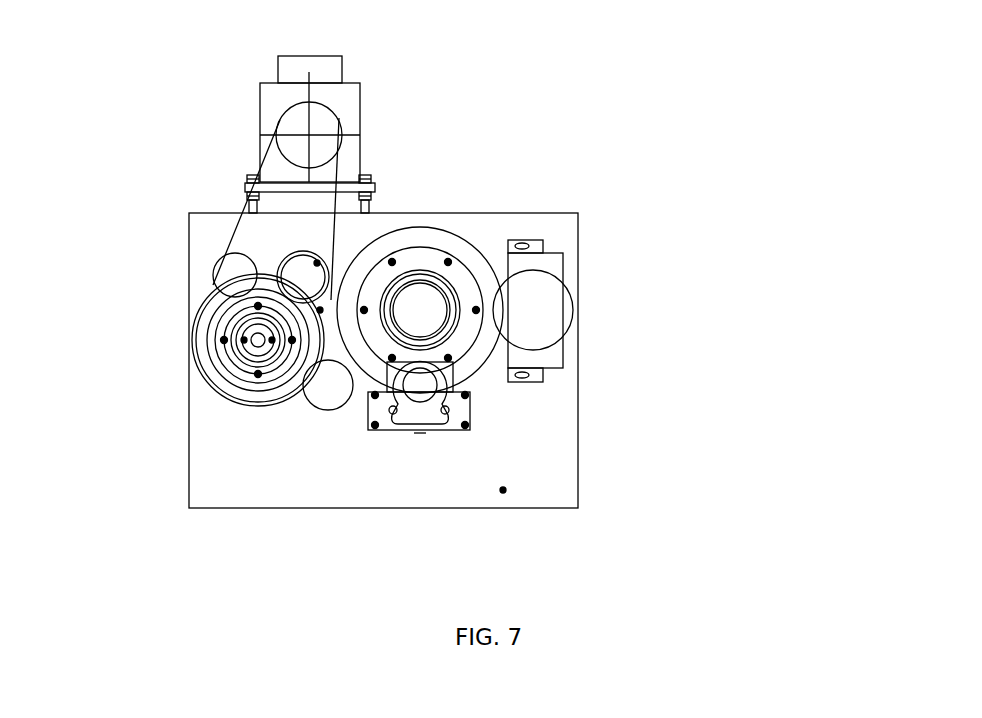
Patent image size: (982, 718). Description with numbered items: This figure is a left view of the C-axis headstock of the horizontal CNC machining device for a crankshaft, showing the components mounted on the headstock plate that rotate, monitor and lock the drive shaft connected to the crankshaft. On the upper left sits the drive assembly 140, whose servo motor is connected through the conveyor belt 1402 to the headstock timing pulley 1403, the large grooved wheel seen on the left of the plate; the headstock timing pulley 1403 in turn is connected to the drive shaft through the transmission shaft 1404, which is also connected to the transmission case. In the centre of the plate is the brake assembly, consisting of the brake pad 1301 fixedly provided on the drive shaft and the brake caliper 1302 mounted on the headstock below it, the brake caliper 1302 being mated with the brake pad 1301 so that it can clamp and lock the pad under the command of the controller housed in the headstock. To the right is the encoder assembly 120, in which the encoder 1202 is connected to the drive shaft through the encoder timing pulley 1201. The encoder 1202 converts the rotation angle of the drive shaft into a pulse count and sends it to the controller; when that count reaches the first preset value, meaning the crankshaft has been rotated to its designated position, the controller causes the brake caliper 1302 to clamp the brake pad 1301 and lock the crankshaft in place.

The drive assembly 140 is at (232, 119).
The conveyor belt 1402 is at (194, 213).
The headstock timing pulley 1403 is at (177, 347).
The transmission shaft 1404 is at (215, 268).
The brake pad 1301 is at (477, 234).
The brake caliper 1302 is at (540, 463).
The encoder assembly 120 is at (702, 318).
The encoder timing pulley 1201 is at (619, 277).
The encoder 1202 is at (631, 396).